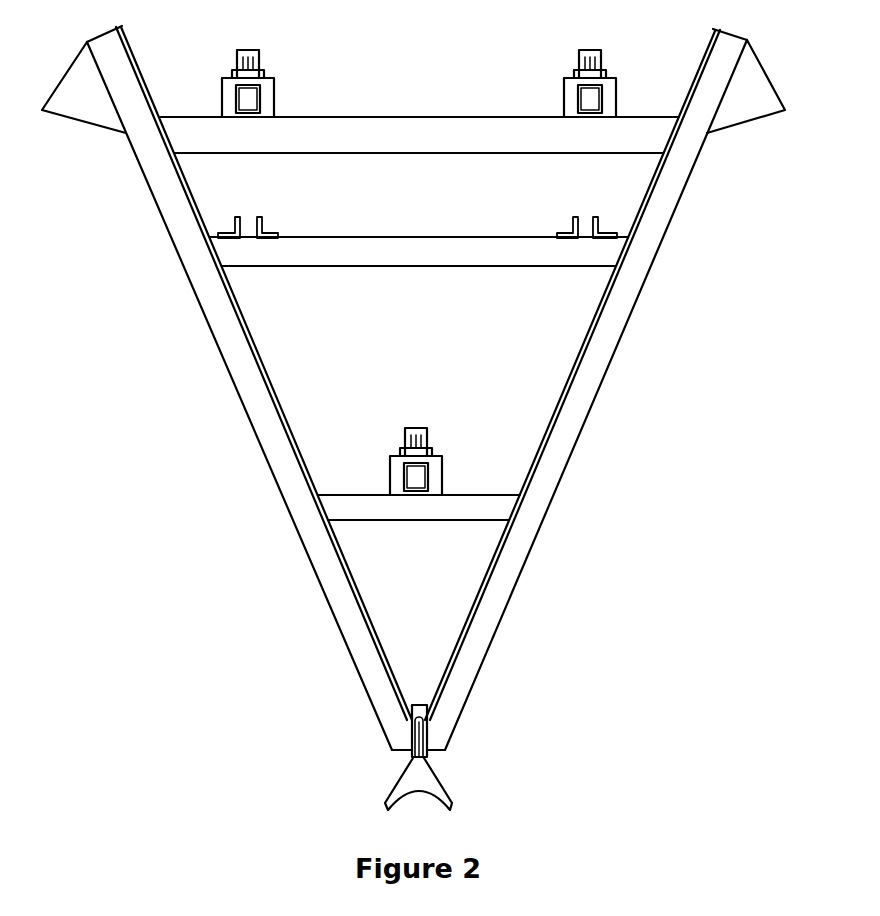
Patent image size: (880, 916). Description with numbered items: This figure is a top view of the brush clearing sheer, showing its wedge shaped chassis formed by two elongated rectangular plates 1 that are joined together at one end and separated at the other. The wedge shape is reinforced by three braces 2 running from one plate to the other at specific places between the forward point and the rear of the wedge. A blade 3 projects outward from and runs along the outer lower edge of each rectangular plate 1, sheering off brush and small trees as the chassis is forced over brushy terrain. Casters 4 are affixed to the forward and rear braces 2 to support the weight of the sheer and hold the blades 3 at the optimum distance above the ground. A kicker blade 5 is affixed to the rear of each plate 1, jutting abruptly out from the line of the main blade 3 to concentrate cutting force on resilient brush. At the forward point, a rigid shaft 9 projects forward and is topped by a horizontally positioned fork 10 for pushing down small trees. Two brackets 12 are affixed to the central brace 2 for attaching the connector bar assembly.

The rectangular plate 1 is at (307, 460).
The brace 2 is at (203, 122).
The blade 3 is at (328, 570).
The caster 4 is at (273, 57).
The kicker blade 5 is at (83, 108).
The rigid shaft 9 is at (413, 742).
The fork 10 is at (432, 785).
The bracket 12 is at (270, 217).